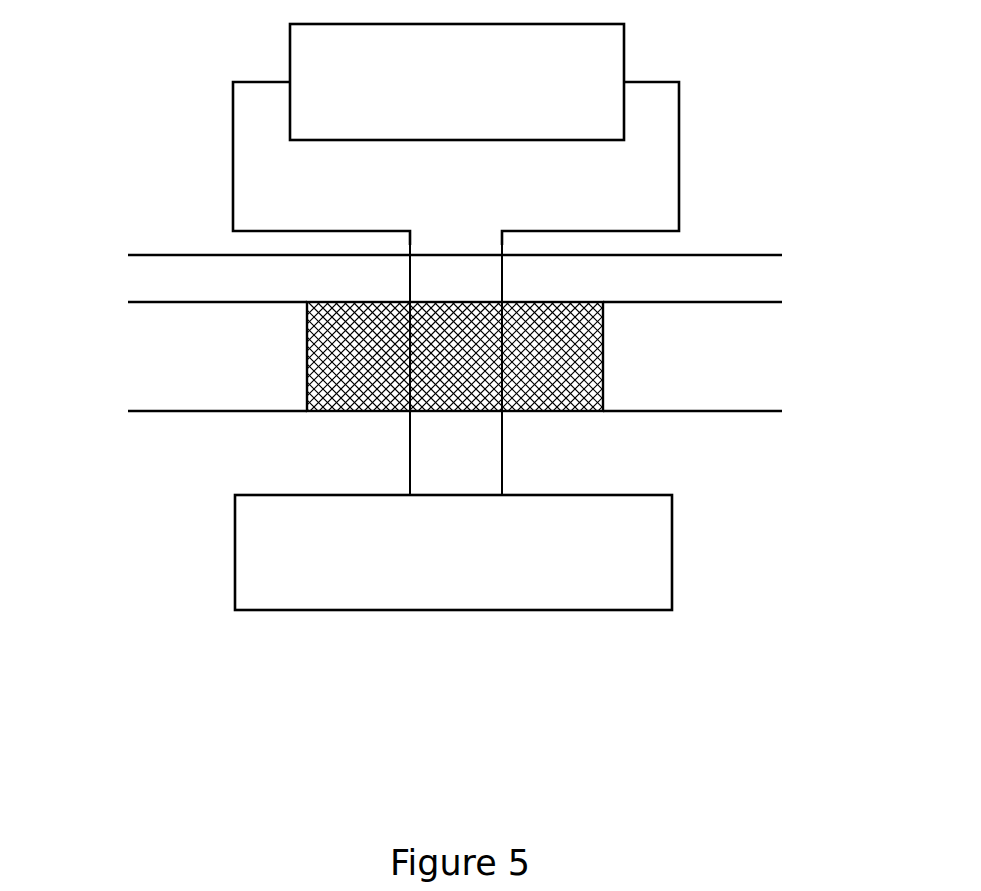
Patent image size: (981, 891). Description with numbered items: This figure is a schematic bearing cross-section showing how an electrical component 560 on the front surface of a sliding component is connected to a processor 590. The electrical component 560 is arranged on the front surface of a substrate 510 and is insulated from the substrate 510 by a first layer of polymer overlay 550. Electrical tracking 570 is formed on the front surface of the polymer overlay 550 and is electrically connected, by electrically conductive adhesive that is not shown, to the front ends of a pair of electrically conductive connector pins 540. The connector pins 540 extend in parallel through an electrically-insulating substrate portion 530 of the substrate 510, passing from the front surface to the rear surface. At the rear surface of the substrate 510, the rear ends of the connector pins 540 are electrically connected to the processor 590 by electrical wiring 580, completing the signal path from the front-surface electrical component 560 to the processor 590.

The substrate 510 is at (172, 360).
The electrically-insulating substrate portion 530 is at (587, 358).
The connector pins 540 is at (505, 363).
The first layer of polymer overlay 550 is at (183, 277).
The electrical component 560 is at (457, 82).
The electrical tracking 570 is at (680, 157).
The electrical wiring 580 is at (407, 452).
The processor 590 is at (453, 552).